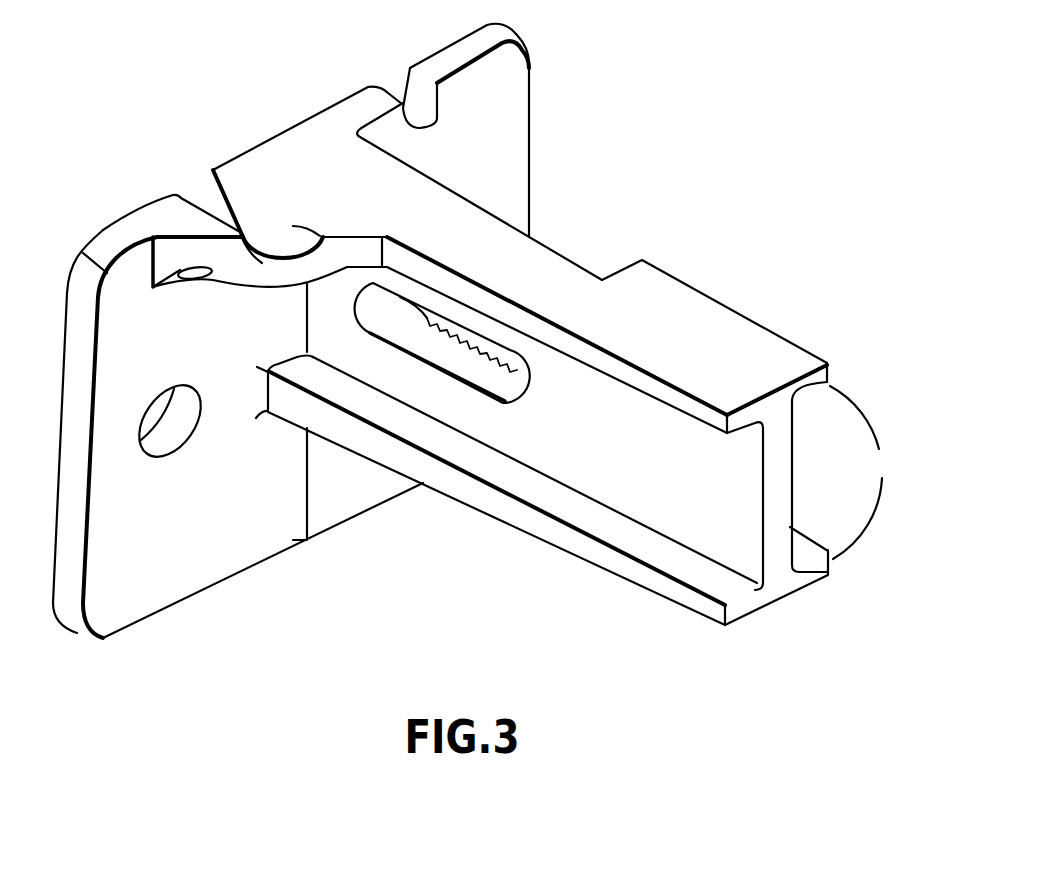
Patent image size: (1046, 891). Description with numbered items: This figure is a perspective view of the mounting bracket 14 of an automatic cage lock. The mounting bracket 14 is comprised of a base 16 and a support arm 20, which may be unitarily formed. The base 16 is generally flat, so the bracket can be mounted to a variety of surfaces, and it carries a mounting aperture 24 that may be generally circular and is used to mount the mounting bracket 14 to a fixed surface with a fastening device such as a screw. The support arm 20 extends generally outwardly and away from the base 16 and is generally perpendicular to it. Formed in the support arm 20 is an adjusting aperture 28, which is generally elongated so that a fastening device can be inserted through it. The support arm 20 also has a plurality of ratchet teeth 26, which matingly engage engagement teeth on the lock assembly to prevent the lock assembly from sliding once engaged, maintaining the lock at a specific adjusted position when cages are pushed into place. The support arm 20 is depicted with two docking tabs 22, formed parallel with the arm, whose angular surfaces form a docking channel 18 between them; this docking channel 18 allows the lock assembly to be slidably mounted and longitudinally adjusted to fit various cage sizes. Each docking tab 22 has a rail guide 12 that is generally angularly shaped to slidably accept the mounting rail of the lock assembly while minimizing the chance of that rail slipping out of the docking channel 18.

The rail guide 12 is at (810, 530).
The mounting bracket 14 is at (456, 338).
The base 16 is at (497, 100).
The docking channel 18 is at (795, 473).
The support arm 20 is at (753, 355).
The docking tab 22 is at (861, 472).
The mounting aperture 24 is at (153, 415).
The ratchet teeth 26 is at (490, 362).
The adjusting aperture 28 is at (427, 317).